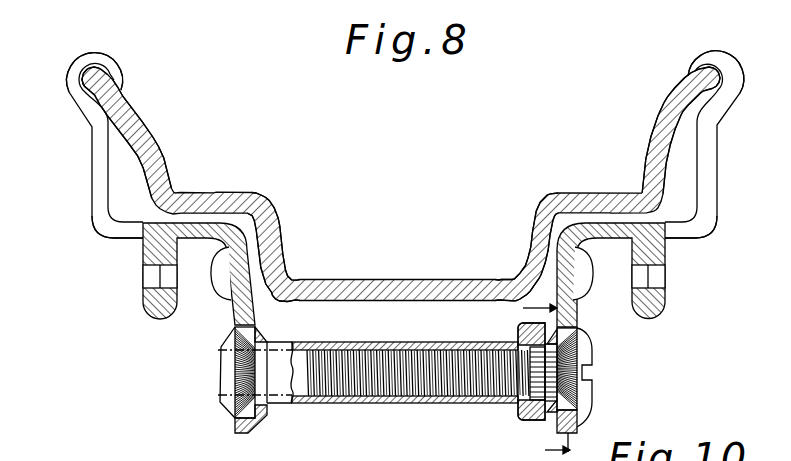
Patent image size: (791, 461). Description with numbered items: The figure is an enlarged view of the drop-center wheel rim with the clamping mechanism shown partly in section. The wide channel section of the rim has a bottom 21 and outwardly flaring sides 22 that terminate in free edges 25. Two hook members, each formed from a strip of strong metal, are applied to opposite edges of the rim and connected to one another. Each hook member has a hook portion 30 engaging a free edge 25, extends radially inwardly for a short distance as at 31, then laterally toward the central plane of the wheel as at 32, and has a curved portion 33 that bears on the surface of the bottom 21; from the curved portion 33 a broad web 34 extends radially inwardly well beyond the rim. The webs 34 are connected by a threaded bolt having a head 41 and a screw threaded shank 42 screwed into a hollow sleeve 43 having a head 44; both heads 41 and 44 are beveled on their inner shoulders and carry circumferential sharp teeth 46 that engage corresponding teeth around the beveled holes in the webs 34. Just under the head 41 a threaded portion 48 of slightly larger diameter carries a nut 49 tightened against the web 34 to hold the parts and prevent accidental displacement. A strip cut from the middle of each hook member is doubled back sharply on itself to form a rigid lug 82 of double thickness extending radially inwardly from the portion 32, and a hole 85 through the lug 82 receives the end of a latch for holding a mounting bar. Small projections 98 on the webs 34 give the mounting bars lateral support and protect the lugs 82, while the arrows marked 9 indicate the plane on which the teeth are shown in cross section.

The section line 9- 9 is at (550, 372).
The bottom of the wide channel section 21 is at (221, 192).
The sides of the wide channel section 22 is at (160, 143).
The free edges 25 is at (108, 70).
The hook portion 30 is at (106, 53).
The radially inward portion 31 is at (92, 162).
The lateral portion 32 is at (141, 231).
The curved portion 33 is at (282, 213).
The radially inward web portion 34 is at (236, 428).
The bolt head 41 is at (589, 345).
The screw threaded shank 42 is at (468, 393).
The hollow sleeve 43 is at (387, 369).
The sleeve head 44 is at (224, 387).
The sharp teeth 46 is at (241, 357).
The screw threaded portion 48 is at (528, 403).
The nut 49 is at (538, 452).
The lug portion 82 is at (403, 275).
The hole 85 is at (150, 268).
The small projections 98 is at (218, 290).